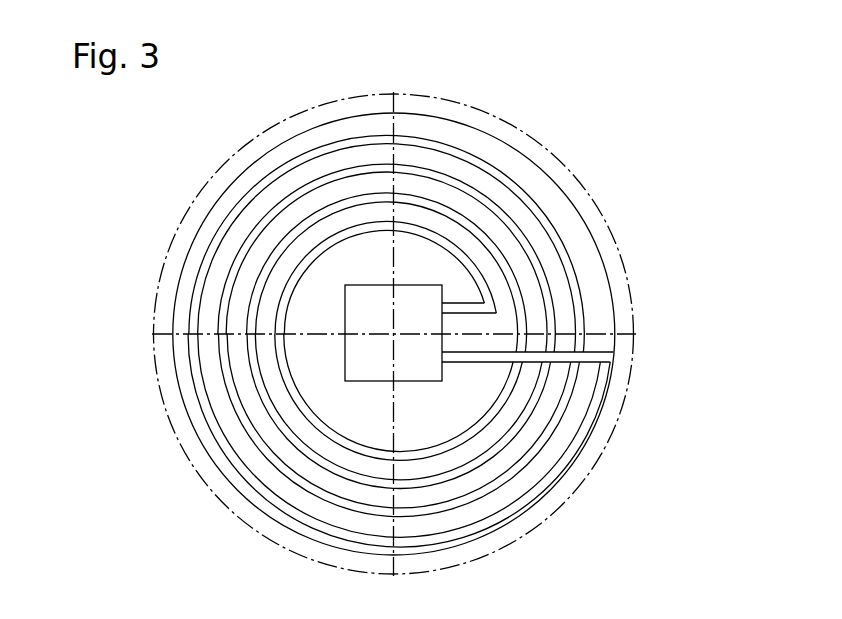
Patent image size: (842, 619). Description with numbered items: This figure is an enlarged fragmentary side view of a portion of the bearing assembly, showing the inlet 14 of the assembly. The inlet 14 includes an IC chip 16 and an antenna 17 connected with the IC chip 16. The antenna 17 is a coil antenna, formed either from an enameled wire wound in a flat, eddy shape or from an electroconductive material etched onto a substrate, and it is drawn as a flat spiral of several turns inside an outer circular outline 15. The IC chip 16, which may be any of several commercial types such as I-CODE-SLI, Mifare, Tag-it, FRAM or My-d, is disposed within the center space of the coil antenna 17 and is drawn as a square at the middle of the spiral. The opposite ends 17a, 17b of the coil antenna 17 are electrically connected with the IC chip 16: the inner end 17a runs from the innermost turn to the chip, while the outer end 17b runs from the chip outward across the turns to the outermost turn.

The inlet 14 is at (98, 207).
The outer boundary circle 15 is at (538, 167).
The IC chip 16 is at (343, 299).
The antenna 17 is at (388, 229).
The end of the coil antenna 17a is at (457, 310).
The end of the coil antenna 17b is at (463, 363).